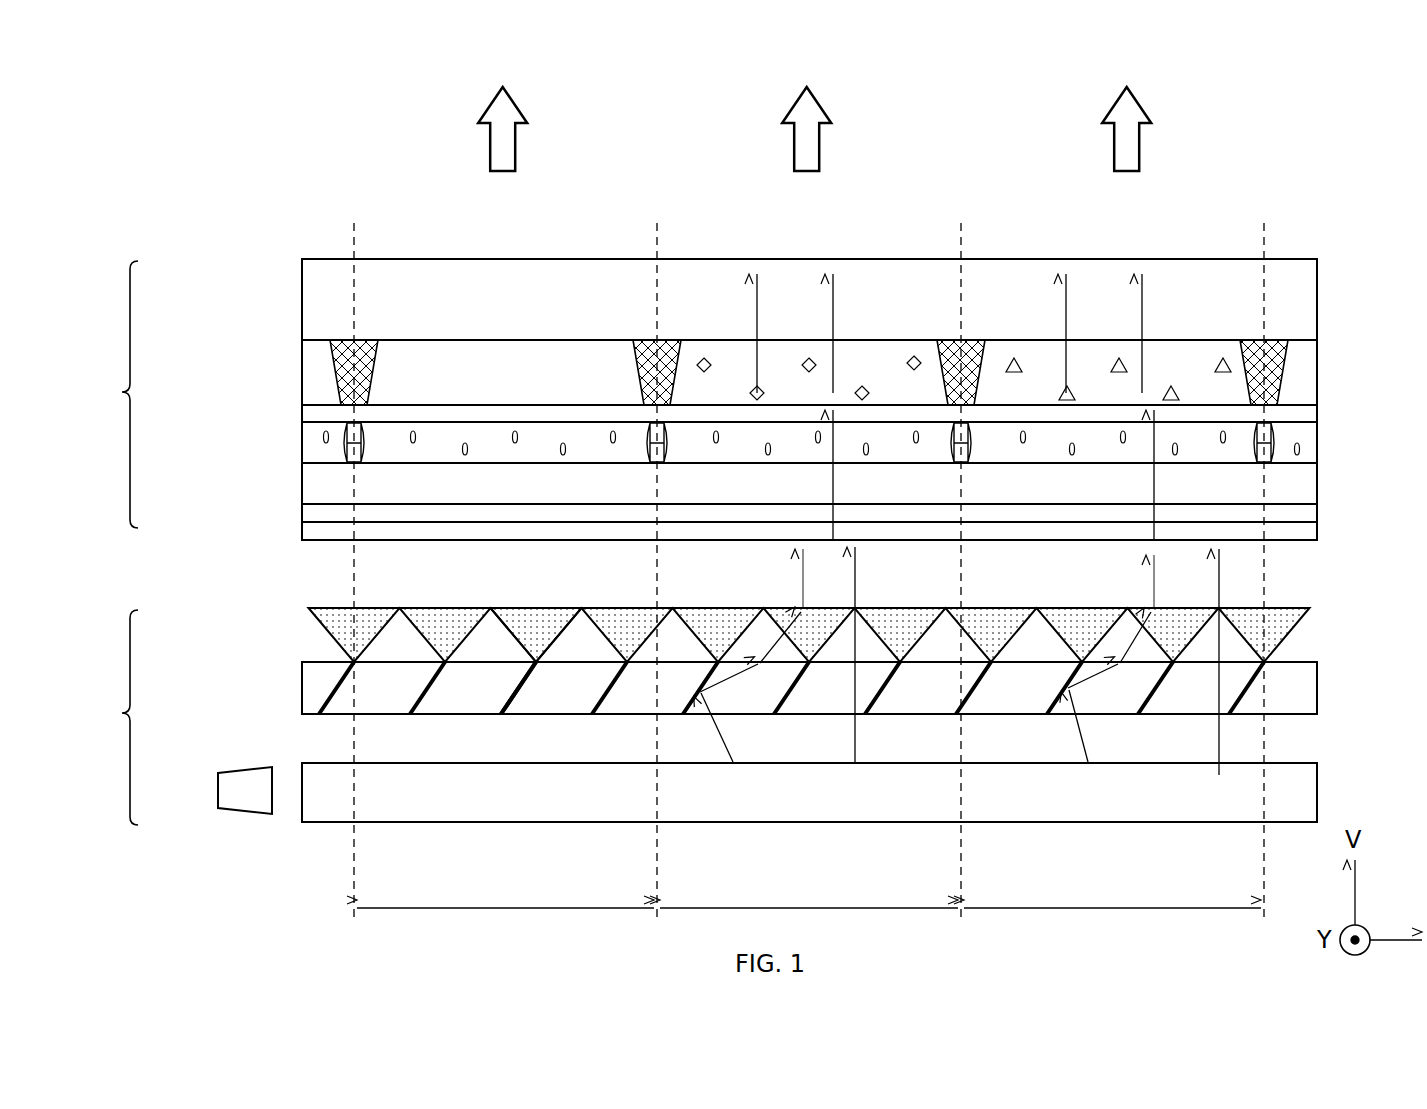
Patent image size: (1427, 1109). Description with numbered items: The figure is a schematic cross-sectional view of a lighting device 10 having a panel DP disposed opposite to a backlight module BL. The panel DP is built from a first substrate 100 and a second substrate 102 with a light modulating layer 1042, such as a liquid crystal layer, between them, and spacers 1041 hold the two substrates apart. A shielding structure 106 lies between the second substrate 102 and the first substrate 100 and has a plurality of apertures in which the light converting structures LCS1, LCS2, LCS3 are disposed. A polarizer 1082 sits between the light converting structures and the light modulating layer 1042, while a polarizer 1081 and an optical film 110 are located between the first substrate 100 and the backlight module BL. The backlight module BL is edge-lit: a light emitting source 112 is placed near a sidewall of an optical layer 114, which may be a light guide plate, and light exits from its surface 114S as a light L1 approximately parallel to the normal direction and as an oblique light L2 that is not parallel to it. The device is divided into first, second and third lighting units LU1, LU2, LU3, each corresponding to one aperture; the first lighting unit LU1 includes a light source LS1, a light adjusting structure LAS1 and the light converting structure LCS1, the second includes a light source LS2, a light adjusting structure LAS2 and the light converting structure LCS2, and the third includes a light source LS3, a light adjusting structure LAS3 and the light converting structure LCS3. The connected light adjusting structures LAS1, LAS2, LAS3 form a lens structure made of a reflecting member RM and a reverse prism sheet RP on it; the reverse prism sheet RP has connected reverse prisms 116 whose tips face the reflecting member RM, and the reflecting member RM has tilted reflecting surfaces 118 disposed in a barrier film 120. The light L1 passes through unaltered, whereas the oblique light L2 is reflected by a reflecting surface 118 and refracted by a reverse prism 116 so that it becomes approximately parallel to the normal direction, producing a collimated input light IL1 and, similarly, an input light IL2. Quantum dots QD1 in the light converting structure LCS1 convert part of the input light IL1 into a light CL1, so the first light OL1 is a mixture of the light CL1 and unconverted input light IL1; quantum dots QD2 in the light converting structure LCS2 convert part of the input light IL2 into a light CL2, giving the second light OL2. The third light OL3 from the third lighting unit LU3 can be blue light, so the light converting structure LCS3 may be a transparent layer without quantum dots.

The lighting device 10 is at (291, 156).
The second substrate 102 is at (312, 303).
The shielding structure 106 is at (333, 365).
The polarizer 1082 is at (312, 410).
The light modulating layer 1042 is at (312, 429).
The spacers 1041 is at (353, 450).
The first substrate 100 is at (312, 488).
The polarizer 1081 is at (312, 517).
The optical film 110 is at (312, 533).
The light emitting source 112 is at (233, 789).
The optical layer 114 is at (313, 810).
The surface 114S is at (1293, 762).
The reverse prisms 116 is at (537, 622).
The reflecting surfaces 118 is at (520, 690).
The barrier film 120 is at (553, 697).
The panel DP is at (110, 394).
The backlight module BL is at (112, 717).
The reverse prism sheet RP is at (309, 629).
The reflecting member RM is at (293, 688).
The light converting structure LCS1 is at (722, 338).
The light converting structure LCS2 is at (1032, 338).
The light converting structure LCS3 is at (436, 340).
The quantum dots QD1 is at (913, 358).
The quantum dots QD2 is at (1223, 360).
The light CL1 is at (757, 327).
The light CL2 is at (1067, 327).
The input light IL1 is at (833, 327).
The input light IL2 is at (1143, 327).
The first light OL1 is at (812, 148).
The second light OL2 is at (1132, 148).
The third light OL3 is at (507, 150).
The light adjusting structure LAS1 is at (793, 603).
The light adjusting structure LAS2 is at (1131, 603).
The light adjusting structure LAS3 is at (489, 603).
The light L1 is at (857, 740).
The oblique light L2 is at (723, 737).
The light source LS1 is at (781, 832).
The light source LS2 is at (1086, 832).
The light source LS3 is at (466, 832).
The first lighting unit LU1 is at (809, 892).
The second lighting unit LU2 is at (1112, 892).
The third lighting unit LU3 is at (505, 892).